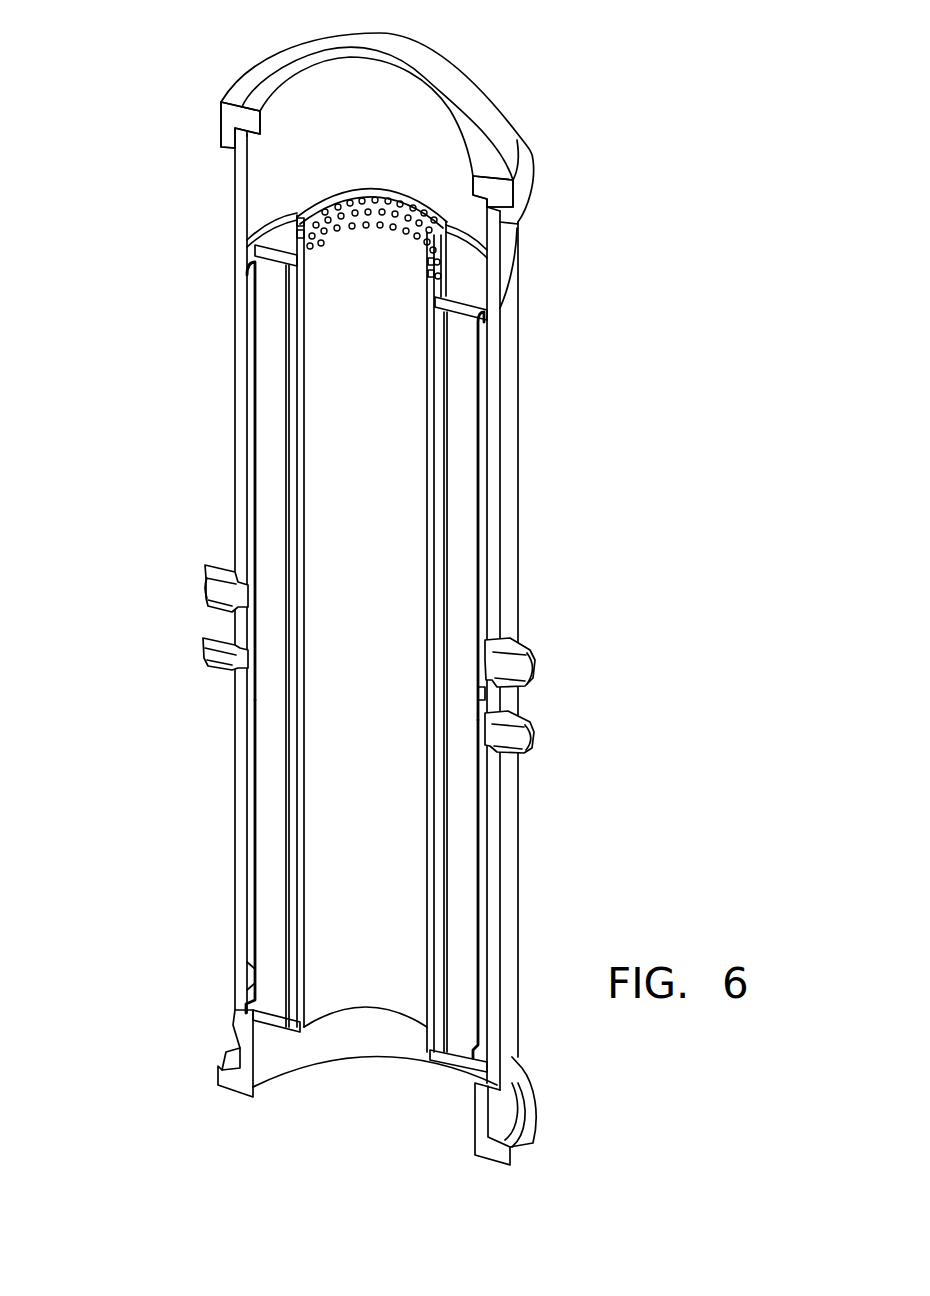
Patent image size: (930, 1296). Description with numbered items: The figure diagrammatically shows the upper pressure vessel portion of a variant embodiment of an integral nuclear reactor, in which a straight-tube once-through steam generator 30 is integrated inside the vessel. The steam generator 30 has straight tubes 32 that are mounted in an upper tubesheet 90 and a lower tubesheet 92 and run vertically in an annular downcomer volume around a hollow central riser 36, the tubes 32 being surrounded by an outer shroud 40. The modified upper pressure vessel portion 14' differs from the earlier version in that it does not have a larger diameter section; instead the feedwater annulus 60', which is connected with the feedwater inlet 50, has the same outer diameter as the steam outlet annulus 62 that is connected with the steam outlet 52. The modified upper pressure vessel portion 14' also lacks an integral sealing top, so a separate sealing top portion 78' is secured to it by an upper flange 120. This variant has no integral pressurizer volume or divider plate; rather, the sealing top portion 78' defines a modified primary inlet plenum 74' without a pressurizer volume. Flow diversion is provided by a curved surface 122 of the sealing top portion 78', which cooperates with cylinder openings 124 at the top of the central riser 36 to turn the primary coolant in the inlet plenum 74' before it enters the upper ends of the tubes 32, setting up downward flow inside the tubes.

The sealing top portion 78' is at (315, 115).
The curved surface 122 is at (243, 108).
The modified primary inlet plenum 74' is at (219, 152).
The upper flange 120 is at (519, 227).
The upper tubesheet 90 is at (273, 257).
The cylinder openings 124 is at (378, 215).
The outer shroud 40 is at (255, 445).
The steam outlet annulus 62 is at (480, 457).
The modified upper pressure vessel portion 14' is at (431, 649).
The steam outlet 52 is at (521, 645).
The feedwater inlet 50 is at (521, 727).
The central riser 36 is at (332, 683).
The steam generator 30 is at (288, 800).
The feedwater annulus 60' is at (546, 889).
The tubes 32 is at (258, 890).
The lower tubesheet 92 is at (270, 1015).